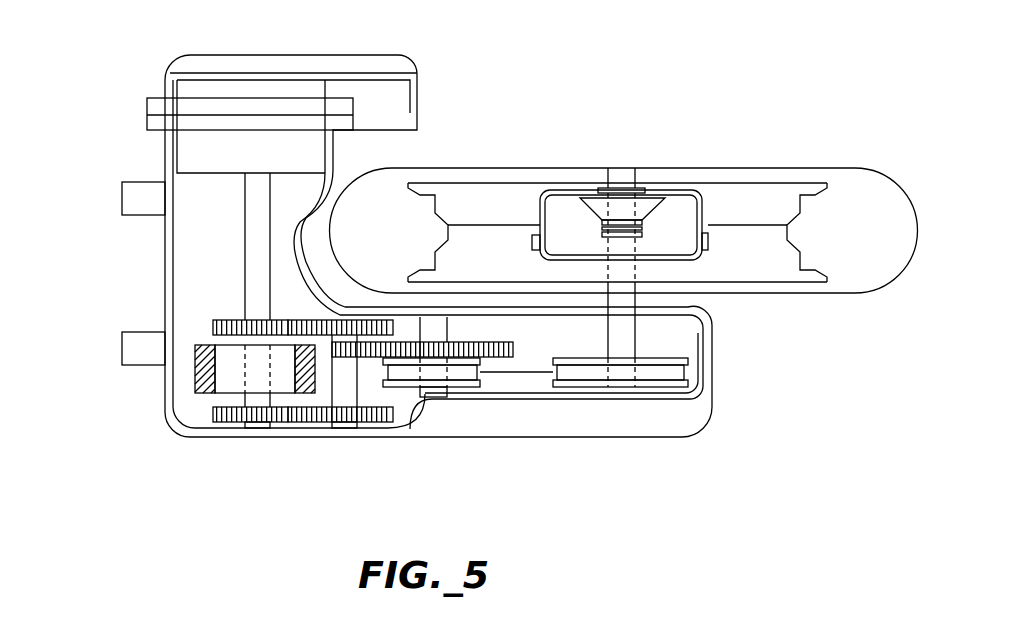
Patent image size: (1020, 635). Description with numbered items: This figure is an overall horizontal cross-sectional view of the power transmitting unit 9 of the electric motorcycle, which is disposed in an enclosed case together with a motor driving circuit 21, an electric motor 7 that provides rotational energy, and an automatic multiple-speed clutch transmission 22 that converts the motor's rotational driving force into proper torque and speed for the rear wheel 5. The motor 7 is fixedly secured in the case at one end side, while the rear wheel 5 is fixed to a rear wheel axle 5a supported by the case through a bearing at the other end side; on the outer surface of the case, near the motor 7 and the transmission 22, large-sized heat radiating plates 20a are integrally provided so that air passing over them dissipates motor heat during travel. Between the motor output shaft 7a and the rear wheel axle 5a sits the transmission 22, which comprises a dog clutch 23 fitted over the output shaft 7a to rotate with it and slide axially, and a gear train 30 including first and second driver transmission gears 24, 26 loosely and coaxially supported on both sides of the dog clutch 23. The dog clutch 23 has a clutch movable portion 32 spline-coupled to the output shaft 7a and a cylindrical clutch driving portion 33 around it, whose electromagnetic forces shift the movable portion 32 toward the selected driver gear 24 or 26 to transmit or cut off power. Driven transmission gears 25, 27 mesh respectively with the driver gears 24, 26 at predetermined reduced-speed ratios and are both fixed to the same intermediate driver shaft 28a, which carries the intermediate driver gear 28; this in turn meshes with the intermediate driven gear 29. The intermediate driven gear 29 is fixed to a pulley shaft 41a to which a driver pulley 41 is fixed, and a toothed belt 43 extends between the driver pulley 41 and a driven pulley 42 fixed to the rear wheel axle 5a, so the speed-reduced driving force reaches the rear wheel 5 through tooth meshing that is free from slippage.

The power transmitting unit 9 is at (140, 80).
The heat radiating plates 20a is at (335, 55).
The motor driving circuit 21 is at (400, 95).
The electric motor 7 is at (205, 137).
The motor output shaft 7a is at (253, 207).
The rear wheel 5 is at (855, 200).
The rear wheel axle 5a is at (625, 345).
The second driver transmission gear 26 is at (212, 327).
The second driven transmission gear 27 is at (338, 325).
The automatic multiple-speed clutch transmission 22 is at (227, 315).
The first driver transmission gear 24 is at (222, 423).
The intermediate driver gear 28 is at (372, 417).
The intermediate driver shaft 28a is at (337, 383).
The gear train 30 is at (308, 430).
The clutch movable portion 32 is at (227, 360).
The dog clutch 23 is at (188, 393).
The clutch driving portion 33 is at (200, 400).
The first driven transmission gear 25 is at (345, 353).
The intermediate driven gear 29 is at (513, 349).
The pulley shaft 41a is at (435, 330).
The driver pulley 41 is at (412, 387).
The driven pulley 42 is at (590, 383).
The toothed belt 43 is at (493, 373).